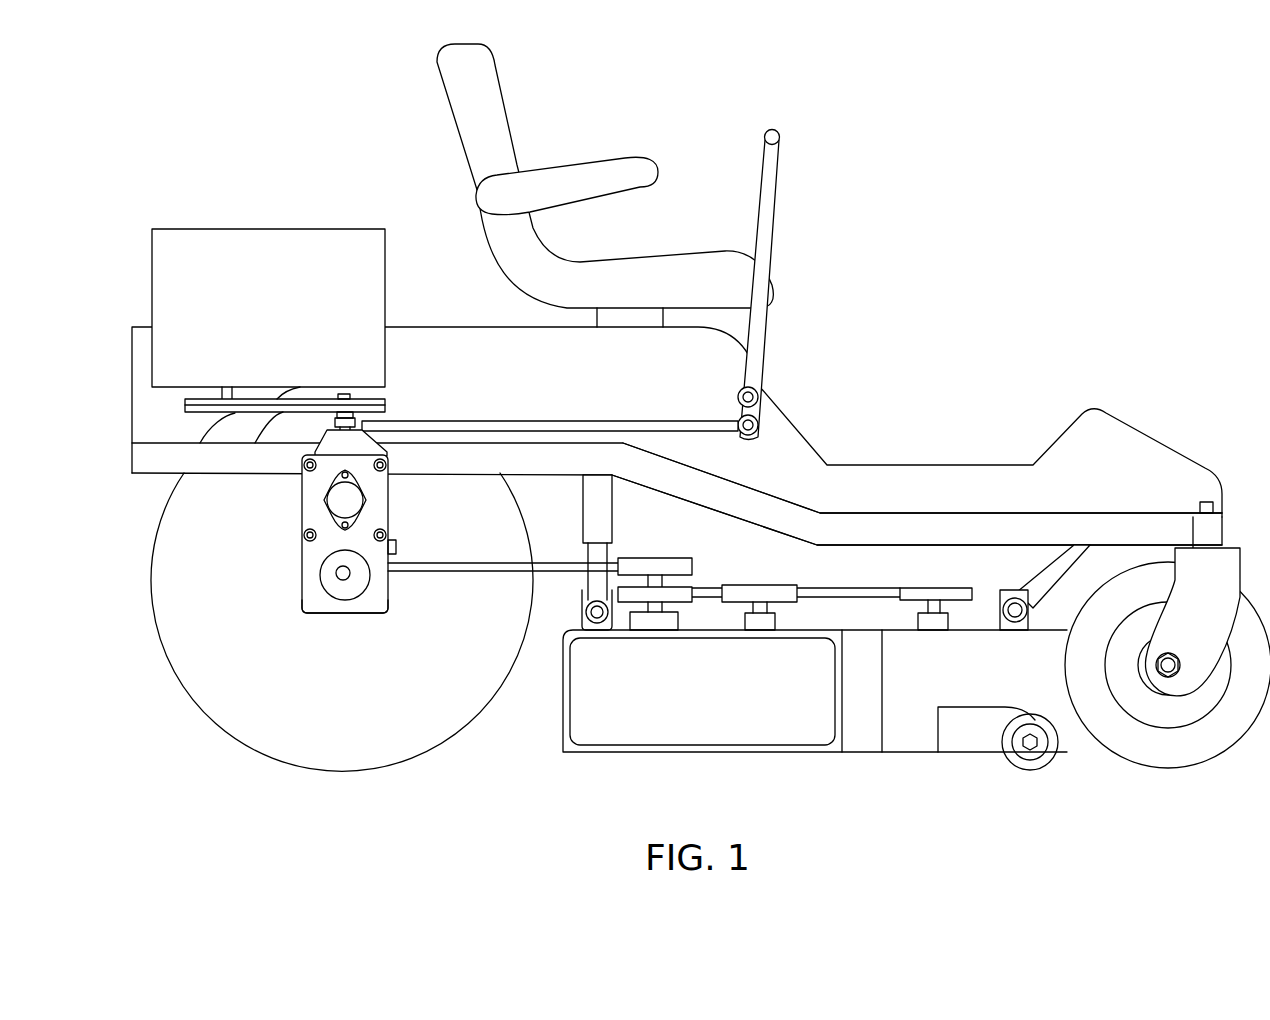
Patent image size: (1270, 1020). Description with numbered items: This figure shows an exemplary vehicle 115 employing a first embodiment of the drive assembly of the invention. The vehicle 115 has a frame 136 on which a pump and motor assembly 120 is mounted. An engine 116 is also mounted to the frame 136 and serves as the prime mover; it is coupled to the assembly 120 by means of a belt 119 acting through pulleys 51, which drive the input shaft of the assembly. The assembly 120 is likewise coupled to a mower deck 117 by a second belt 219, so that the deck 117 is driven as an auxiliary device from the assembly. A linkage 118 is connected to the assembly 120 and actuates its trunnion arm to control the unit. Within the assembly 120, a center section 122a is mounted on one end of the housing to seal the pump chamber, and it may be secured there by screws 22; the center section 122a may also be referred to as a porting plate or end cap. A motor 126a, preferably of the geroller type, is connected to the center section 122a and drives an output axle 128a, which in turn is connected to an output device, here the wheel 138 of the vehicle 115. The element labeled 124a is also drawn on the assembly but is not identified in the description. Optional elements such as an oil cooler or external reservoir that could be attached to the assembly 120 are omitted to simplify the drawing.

The vehicle 115 is at (972, 286).
The engine 116 is at (288, 321).
The deck 117 is at (995, 681).
The linkage 118 is at (692, 418).
The belt 119 is at (242, 473).
The pump and motor assembly 120 is at (285, 613).
The center section 122a is at (318, 613).
The electric motor 124a is at (343, 500).
The motor 126a is at (355, 590).
The output axle 128a is at (338, 573).
The frame 136 is at (878, 513).
The wheel 138 is at (425, 724).
The belt 219 is at (462, 572).
The screws 22 is at (300, 538).
The pulleys 51 is at (209, 413).